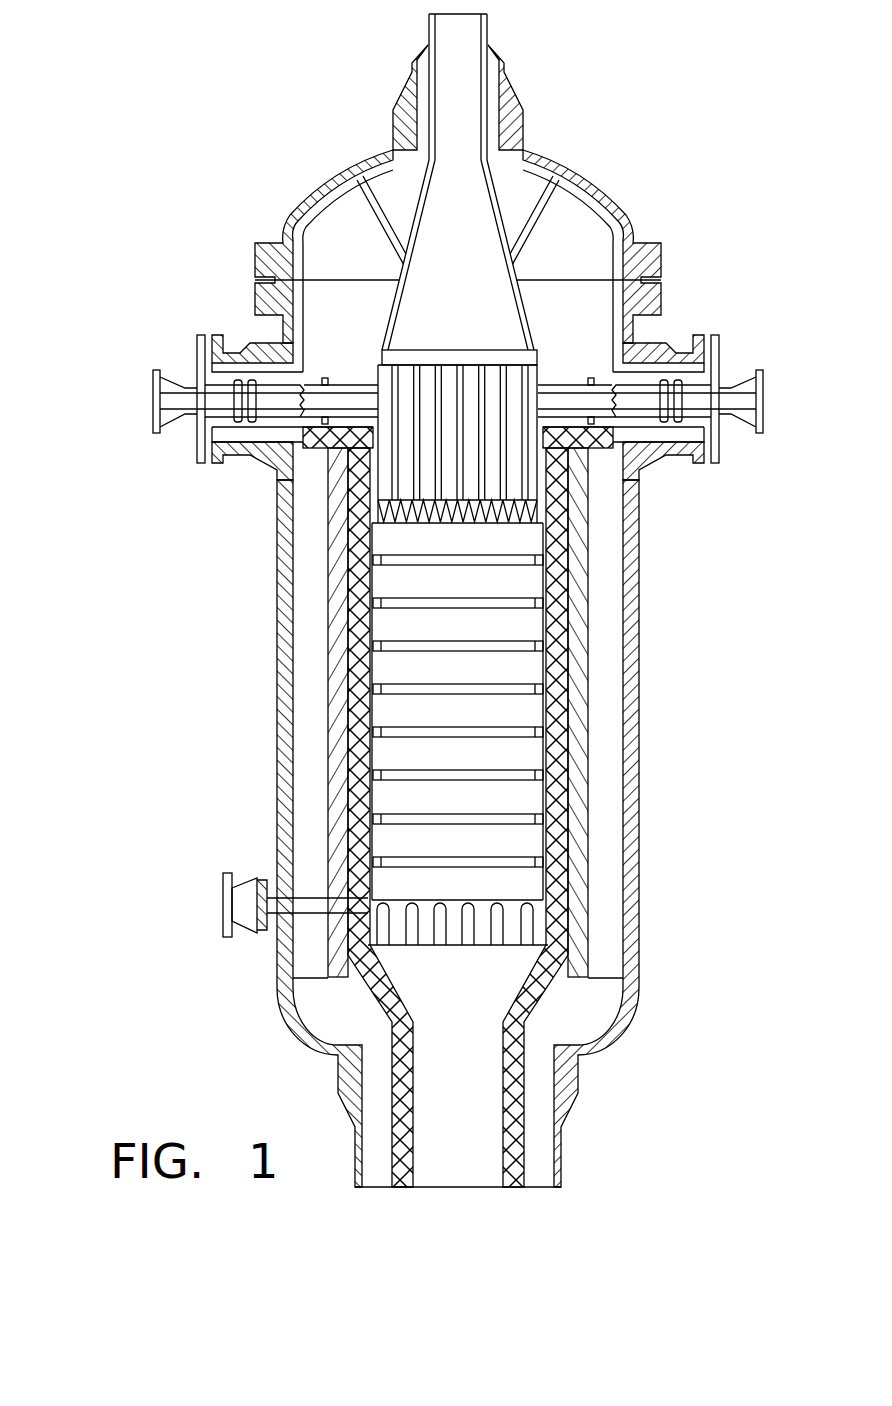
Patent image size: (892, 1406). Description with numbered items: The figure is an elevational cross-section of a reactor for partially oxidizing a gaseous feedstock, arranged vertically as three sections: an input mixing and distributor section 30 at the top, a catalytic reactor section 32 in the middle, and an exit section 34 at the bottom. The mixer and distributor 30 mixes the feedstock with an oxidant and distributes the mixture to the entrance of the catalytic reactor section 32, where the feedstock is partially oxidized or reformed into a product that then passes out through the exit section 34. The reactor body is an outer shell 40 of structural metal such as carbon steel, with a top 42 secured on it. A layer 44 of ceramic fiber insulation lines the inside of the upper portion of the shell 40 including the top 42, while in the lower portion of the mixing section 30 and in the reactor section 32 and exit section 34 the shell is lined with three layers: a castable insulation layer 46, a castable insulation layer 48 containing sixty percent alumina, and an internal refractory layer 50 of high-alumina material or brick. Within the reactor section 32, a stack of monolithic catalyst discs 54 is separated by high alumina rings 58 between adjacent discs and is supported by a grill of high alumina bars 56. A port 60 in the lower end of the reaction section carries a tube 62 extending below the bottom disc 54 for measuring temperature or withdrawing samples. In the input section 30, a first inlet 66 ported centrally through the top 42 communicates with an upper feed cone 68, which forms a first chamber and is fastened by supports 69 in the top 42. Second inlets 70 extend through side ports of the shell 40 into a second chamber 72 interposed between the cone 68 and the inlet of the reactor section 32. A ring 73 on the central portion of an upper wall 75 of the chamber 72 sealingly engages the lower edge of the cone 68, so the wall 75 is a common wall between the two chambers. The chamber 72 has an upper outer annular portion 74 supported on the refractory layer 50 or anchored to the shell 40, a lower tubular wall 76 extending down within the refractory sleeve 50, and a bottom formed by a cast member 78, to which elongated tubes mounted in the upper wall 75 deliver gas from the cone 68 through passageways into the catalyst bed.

The input mixing and distributor section 30 is at (205, 282).
The catalytic reactor section 32 is at (235, 650).
The exit section 34 is at (235, 1018).
The outer shell 40 is at (283, 718).
The top 42 is at (588, 165).
The layer of insulation 44 is at (330, 188).
The layer of castable insulation 46 is at (303, 532).
The layer of alumina insulation 48 is at (335, 570).
The refractory layer 50 is at (358, 608).
The monolithic catalyst discs 54 is at (520, 712).
The high alumina bars 56 is at (527, 927).
The high alumina rings 58 is at (545, 820).
The port 60 is at (225, 903).
The tube 62 is at (315, 907).
The first inlet 66 is at (468, 37).
The upper feed cone 68 is at (516, 278).
The supports 69 is at (538, 216).
The second inlets 70 is at (185, 388).
The second chamber 72 is at (378, 408).
The ring 73 is at (540, 372).
The upper outer annular portion 74 is at (558, 407).
The upper wall 75 is at (385, 385).
The tubular wall 76 is at (538, 467).
The cast member 78 is at (533, 508).